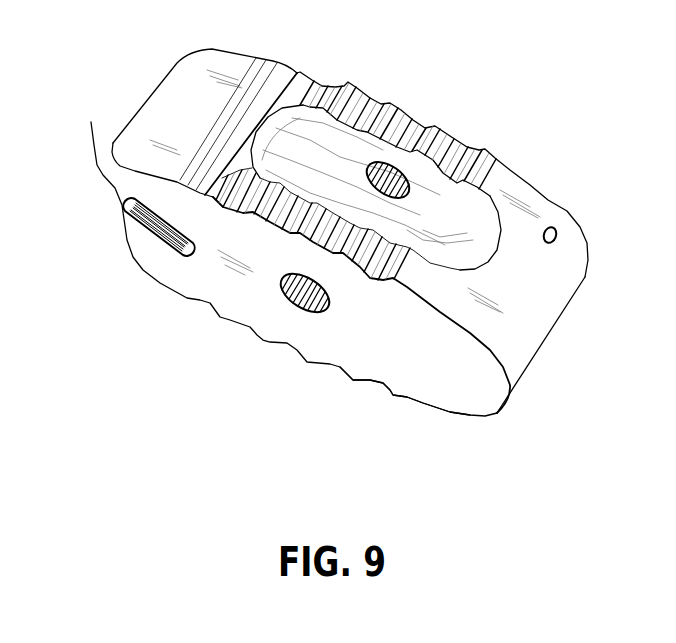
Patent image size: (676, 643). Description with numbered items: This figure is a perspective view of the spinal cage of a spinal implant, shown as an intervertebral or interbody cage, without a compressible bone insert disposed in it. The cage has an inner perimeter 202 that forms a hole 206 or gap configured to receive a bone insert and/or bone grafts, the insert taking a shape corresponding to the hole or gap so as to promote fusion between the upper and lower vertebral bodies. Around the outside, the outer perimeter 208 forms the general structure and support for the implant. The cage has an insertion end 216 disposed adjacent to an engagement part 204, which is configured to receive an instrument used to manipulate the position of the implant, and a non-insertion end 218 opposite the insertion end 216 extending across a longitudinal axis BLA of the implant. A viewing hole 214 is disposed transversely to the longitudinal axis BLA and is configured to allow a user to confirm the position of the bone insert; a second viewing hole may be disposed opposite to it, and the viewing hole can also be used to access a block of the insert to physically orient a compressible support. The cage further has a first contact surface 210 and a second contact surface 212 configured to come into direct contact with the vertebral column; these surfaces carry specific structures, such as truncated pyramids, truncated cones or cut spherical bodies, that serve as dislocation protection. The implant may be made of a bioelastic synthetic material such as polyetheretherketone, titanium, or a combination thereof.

The inner perimeter 202 is at (312, 113).
The engagement part 204 is at (127, 217).
The hole 206 is at (462, 208).
The outer perimeter 208 is at (347, 350).
The first contact surface 210 is at (403, 122).
The second contact surface 212 is at (355, 387).
The viewing hole 214 is at (395, 178).
The insertion end 216 is at (143, 91).
The non-insertion end 218 is at (570, 336).
The longitudinal axis BLA is at (557, 421).